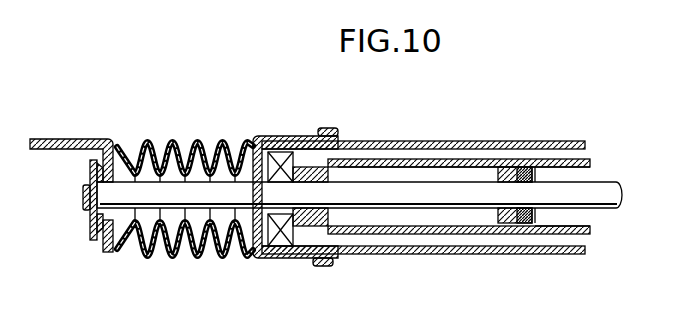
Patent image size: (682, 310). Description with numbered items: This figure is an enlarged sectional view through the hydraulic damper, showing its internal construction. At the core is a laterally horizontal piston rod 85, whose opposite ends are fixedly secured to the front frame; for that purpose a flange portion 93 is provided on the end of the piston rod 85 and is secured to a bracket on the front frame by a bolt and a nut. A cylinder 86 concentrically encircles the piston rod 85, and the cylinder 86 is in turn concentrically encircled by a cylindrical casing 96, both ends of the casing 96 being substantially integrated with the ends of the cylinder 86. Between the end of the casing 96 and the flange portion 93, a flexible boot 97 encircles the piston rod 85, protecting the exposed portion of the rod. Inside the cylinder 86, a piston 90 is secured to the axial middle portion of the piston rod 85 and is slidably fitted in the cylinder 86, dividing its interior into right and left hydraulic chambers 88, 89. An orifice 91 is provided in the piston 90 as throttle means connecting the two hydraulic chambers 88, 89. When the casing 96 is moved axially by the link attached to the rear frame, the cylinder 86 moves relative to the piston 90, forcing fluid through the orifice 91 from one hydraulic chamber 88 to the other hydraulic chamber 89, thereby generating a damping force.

The flange portion 93 is at (58, 139).
The flexible boot 97 is at (177, 141).
The cylindrical casing 96 is at (382, 142).
The cylinder 86 is at (425, 162).
The piston rod 85 is at (398, 208).
The hydraulic chamber 88 is at (473, 173).
The piston 90 is at (527, 168).
The orifice 91 is at (497, 220).
The hydraulic chamber 89 is at (565, 218).